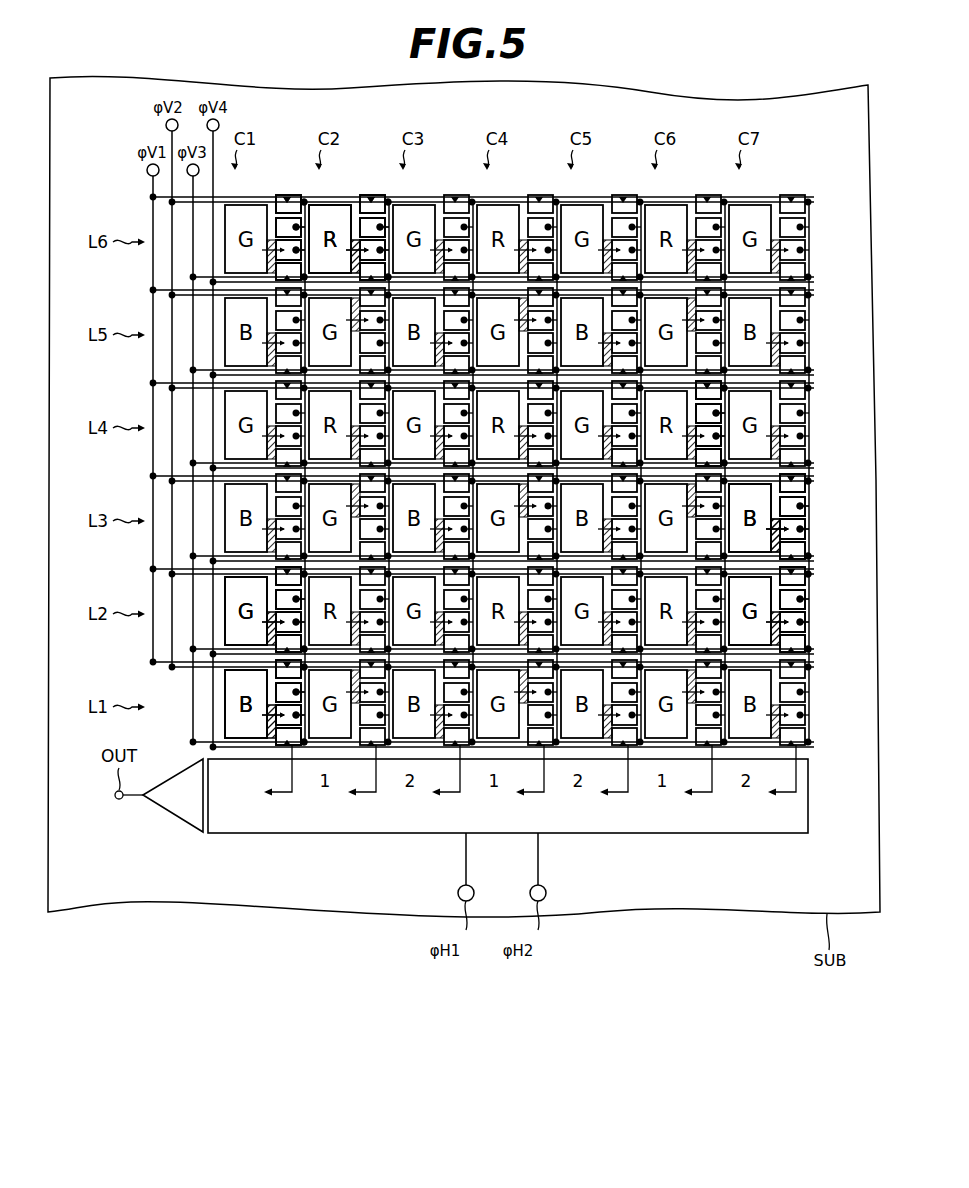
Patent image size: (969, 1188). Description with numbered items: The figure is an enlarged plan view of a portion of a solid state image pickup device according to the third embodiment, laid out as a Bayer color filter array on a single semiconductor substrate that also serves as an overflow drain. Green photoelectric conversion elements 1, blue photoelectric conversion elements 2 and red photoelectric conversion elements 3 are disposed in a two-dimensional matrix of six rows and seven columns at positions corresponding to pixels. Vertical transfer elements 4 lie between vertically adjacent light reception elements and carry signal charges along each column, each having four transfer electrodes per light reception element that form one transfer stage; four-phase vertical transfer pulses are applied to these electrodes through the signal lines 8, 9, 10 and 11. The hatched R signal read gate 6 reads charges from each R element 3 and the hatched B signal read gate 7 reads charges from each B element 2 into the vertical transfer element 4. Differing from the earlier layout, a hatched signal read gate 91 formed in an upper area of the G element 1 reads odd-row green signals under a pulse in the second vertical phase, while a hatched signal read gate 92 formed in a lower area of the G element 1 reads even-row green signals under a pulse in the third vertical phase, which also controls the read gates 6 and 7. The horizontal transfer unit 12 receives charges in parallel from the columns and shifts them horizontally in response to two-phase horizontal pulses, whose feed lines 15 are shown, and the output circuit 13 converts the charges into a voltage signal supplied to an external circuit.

The green photoelectric conversion element 1 is at (225, 614).
The blue photoelectric conversion element 2 is at (225, 714).
The red photoelectric conversion element 3 is at (327, 213).
The vertical transfer element 4 is at (289, 200).
The R signal read gate 6 is at (727, 453).
The B signal read gate 7 is at (733, 550).
The signal line 8 is at (152, 363).
The signal line 9 is at (172, 318).
The signal line 10 is at (193, 226).
The signal line 11 is at (214, 181).
The horizontal transfer unit 12 is at (588, 820).
The output circuit 13 is at (165, 810).
The horizontal clock lines 15 is at (538, 859).
The signal read gate 91 is at (730, 500).
The signal read gate 92 is at (733, 640).